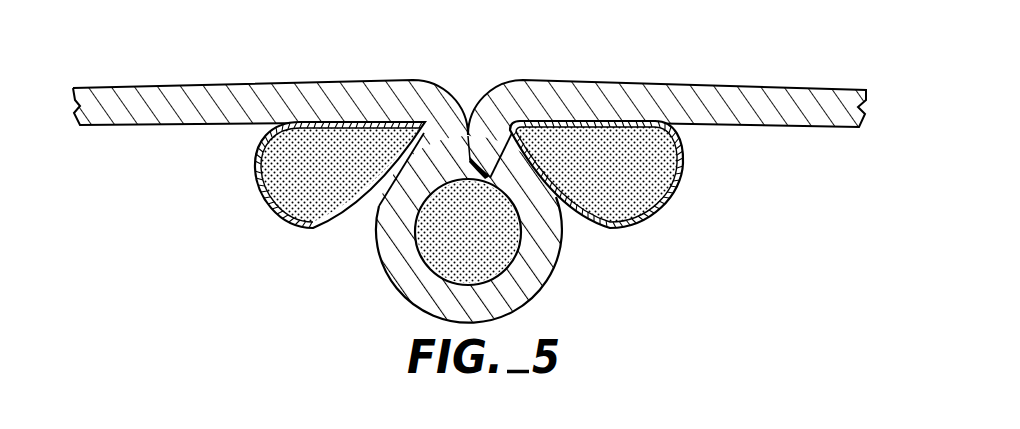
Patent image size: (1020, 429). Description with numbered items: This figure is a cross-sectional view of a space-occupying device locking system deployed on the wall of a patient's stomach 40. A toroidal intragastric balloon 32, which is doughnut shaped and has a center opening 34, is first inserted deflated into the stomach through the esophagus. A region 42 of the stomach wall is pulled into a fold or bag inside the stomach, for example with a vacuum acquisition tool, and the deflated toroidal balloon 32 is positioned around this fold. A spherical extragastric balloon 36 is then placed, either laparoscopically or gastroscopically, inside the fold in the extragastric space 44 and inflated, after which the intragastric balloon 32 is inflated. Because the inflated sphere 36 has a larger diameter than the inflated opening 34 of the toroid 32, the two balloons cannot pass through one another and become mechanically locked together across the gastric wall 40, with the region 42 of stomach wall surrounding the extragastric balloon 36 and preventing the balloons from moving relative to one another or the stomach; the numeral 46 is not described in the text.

The toroidal intragastric balloon 32 is at (687, 156).
The opening 34 is at (399, 150).
The spherical extragastric balloon 36 is at (428, 247).
The stomach wall 40 is at (737, 90).
The region of stomach wall 42 is at (583, 277).
The extragastric space 44 is at (370, 78).
The pocket (left) 46 is at (246, 227).